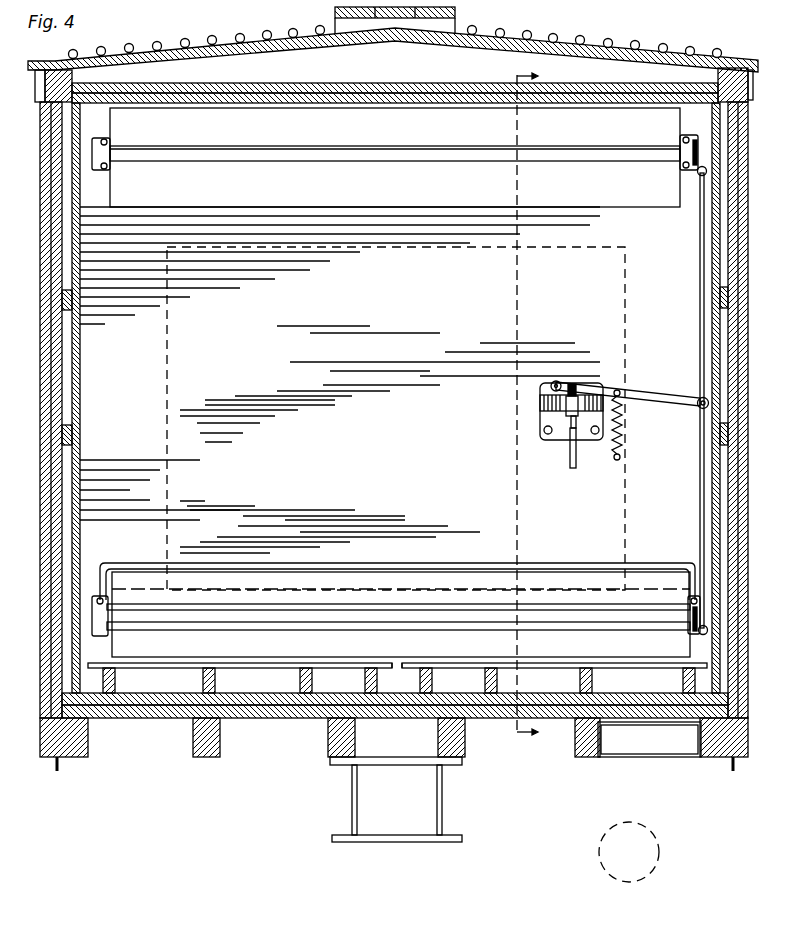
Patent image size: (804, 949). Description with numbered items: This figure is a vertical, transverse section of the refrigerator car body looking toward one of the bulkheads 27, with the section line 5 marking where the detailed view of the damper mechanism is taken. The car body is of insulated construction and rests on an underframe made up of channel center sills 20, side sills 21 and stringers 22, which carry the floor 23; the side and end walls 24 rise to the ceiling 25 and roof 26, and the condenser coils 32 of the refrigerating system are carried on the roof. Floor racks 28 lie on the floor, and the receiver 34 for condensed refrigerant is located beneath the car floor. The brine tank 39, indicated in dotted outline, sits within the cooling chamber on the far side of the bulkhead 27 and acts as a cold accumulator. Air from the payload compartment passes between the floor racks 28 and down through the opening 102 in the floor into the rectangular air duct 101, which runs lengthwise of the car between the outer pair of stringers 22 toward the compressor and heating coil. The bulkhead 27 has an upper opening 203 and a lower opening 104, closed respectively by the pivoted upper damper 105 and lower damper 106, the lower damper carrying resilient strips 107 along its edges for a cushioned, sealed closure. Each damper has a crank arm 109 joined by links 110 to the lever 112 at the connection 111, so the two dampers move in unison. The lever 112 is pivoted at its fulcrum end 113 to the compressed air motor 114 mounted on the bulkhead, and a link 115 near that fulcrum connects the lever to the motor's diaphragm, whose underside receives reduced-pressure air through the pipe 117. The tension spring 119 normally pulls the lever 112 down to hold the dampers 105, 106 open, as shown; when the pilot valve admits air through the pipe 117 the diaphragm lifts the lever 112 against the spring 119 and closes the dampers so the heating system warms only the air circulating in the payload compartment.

The section line 5— 5 is at (524, 404).
The channel center sill 20 is at (350, 810).
The side sill 21 is at (73, 765).
The stringer 22 is at (204, 757).
The floor 23 is at (276, 693).
The side and end walls 24 is at (45, 378).
The ceiling 25 is at (345, 100).
The roof 26 is at (232, 48).
The bulkhead 27 is at (340, 439).
The floor rack 28 is at (388, 675).
The condenser coils 32 is at (155, 36).
The receiver 34 is at (630, 886).
The brine tank 39 is at (166, 430).
The air duct 101 is at (664, 757).
The opening 102 is at (603, 700).
The lower opening 104 is at (345, 580).
The upper damper 105 is at (462, 155).
The lower damper 106 is at (468, 600).
The resilient strips 107 is at (267, 622).
The crank arm 109 is at (696, 180).
The link 110 is at (699, 280).
The link connection 111 is at (699, 410).
The lever 112 is at (645, 394).
The fulcrum end 113 is at (552, 383).
The compressed air motor 114 is at (540, 412).
The link 115 is at (575, 390).
The pipe 117 is at (571, 468).
The tension spring 119 is at (622, 448).
The upper opening 203 is at (322, 194).